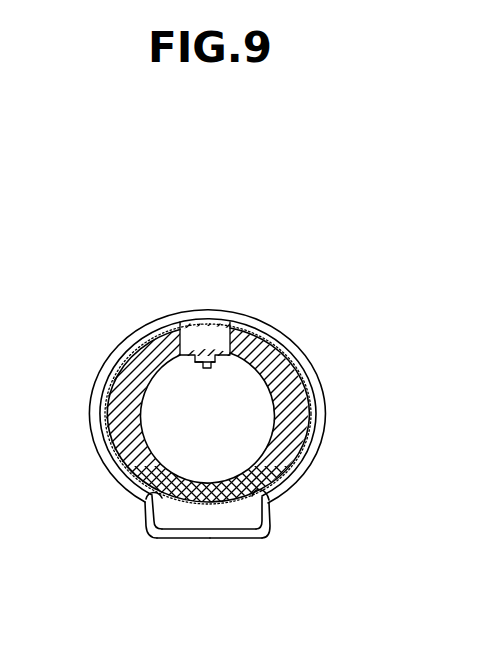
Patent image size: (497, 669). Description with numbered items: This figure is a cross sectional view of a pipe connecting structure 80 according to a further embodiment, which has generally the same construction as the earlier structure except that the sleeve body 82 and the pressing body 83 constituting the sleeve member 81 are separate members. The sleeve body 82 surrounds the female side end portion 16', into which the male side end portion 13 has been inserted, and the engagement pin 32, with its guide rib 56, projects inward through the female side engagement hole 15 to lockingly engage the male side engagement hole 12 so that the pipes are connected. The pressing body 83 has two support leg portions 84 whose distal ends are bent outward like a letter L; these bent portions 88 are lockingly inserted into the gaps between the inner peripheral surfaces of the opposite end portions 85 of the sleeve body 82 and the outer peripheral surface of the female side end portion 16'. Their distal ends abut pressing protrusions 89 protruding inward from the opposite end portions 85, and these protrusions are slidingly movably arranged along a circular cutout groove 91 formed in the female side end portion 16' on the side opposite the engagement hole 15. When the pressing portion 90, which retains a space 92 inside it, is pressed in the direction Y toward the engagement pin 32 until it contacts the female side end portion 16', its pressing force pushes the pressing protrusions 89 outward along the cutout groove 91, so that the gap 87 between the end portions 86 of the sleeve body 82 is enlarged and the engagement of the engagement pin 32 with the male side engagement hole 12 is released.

The pipe connecting structure 80 is at (267, 247).
The sleeve member 81 is at (338, 412).
The sleeve body 82 is at (326, 360).
The opposite end portions of the sleeve body 85 is at (103, 432).
The female side end portion 16' is at (168, 414).
The male side engagement hole 12 is at (196, 352).
The engagement pin 32 is at (222, 337).
The male side end portion 13 is at (148, 356).
The circular cutout groove 91 is at (268, 492).
The female side engagement hole 15 is at (190, 330).
The guide rib 56 is at (205, 374).
The pressing protrusions 89 is at (124, 477).
The support leg portions 84 is at (142, 522).
The end portions of the sleeve body 86 is at (145, 509).
The bent portions 88 is at (144, 497).
The pressing body 83 is at (271, 536).
The gap 87 is at (160, 539).
The space 92 is at (235, 540).
The pressing portion 90 is at (183, 530).
The insertion direction Y is at (208, 570).